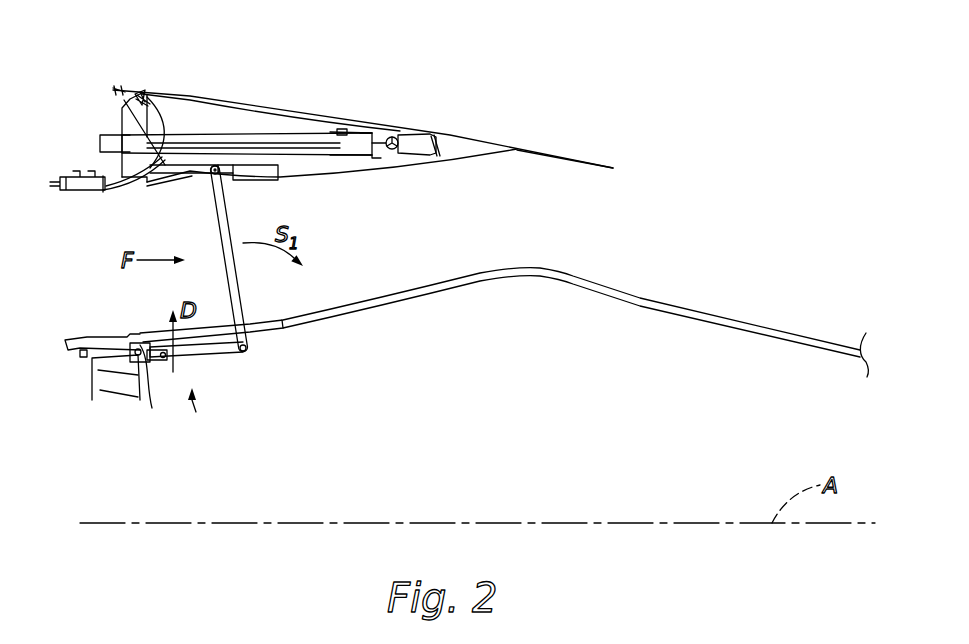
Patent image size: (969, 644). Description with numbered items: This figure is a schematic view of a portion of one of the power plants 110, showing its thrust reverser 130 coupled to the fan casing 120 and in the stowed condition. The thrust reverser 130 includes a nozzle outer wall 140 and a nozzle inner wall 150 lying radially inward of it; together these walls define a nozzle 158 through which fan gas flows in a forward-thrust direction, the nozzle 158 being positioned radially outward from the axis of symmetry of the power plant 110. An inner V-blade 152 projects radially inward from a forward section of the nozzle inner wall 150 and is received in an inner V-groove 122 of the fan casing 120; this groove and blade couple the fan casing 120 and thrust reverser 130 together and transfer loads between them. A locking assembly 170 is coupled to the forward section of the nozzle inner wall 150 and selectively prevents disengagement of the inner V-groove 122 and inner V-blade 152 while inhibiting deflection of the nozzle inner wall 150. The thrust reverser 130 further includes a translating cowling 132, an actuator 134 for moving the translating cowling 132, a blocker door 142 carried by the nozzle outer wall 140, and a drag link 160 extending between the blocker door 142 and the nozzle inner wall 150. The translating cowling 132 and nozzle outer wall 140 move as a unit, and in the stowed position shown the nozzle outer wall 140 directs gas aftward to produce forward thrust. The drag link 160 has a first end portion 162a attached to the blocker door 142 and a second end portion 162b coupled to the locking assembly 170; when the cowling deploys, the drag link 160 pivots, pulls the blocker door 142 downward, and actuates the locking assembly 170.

The power plant 110 is at (474, 75).
The fan casing 120 is at (72, 130).
The inner V-groove 122 is at (150, 400).
The thrust reverser 130 is at (335, 100).
The translating cowling 132 is at (517, 150).
The actuator 134 is at (213, 143).
The nozzle outer wall 140 is at (357, 167).
The blocker door 142 is at (262, 172).
The nozzle inner wall 150 is at (303, 322).
The inner V-blade 152 is at (142, 337).
The nozzle 158 is at (357, 270).
The drag link 160 is at (222, 215).
The first end portion 162a is at (220, 176).
The second end portion 162b is at (247, 318).
The locking assembly 170 is at (200, 418).